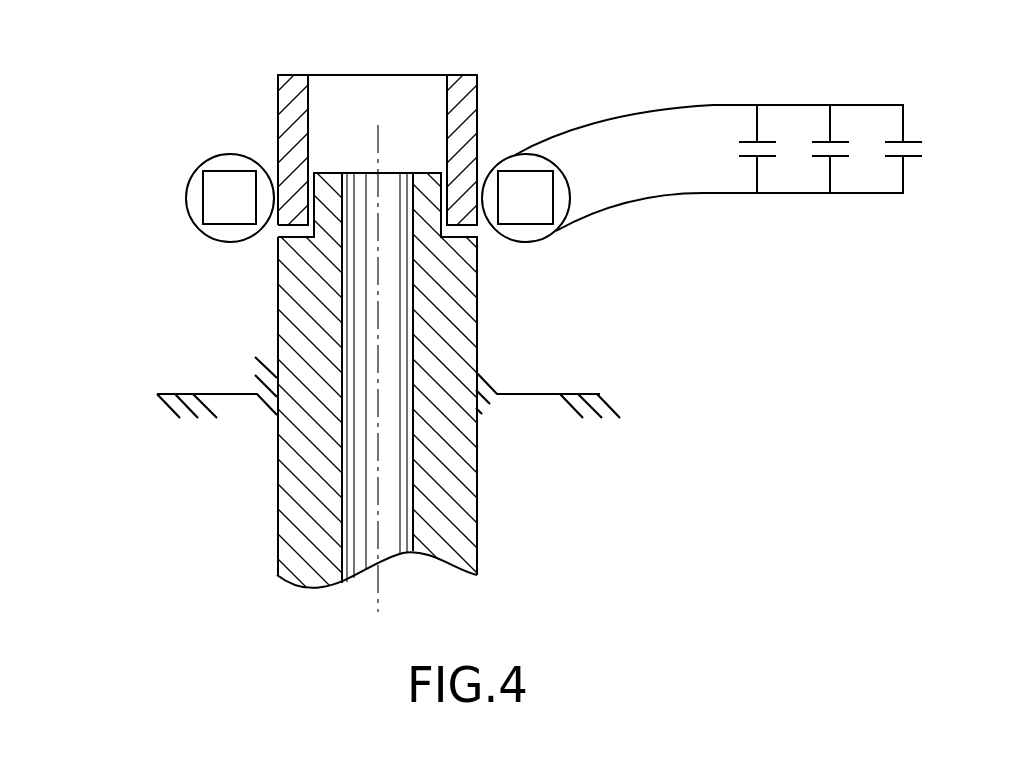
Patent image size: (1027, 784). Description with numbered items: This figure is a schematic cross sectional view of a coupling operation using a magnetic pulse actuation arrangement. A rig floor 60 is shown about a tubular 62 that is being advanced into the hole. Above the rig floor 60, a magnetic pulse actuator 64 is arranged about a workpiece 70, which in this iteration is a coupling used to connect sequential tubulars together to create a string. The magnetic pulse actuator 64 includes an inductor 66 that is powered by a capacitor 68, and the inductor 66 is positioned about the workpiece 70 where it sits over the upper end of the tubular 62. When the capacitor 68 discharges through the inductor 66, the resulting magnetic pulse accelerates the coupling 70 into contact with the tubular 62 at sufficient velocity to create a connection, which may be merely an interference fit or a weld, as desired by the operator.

The rig floor 60 is at (189, 404).
The tubular 62 is at (442, 493).
The magnetic pulse actuator 64 is at (135, 209).
The inductor 66 is at (223, 185).
The capacitor 68 is at (758, 123).
The workpiece 70 is at (284, 102).